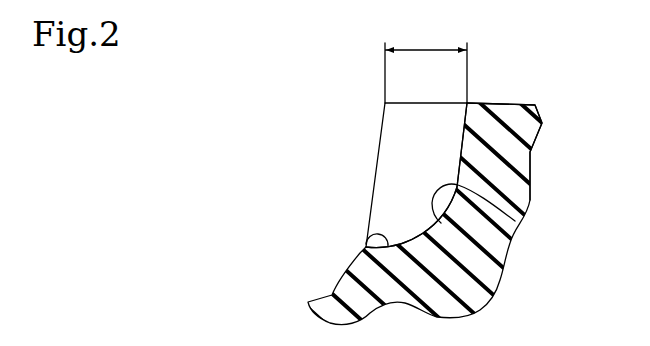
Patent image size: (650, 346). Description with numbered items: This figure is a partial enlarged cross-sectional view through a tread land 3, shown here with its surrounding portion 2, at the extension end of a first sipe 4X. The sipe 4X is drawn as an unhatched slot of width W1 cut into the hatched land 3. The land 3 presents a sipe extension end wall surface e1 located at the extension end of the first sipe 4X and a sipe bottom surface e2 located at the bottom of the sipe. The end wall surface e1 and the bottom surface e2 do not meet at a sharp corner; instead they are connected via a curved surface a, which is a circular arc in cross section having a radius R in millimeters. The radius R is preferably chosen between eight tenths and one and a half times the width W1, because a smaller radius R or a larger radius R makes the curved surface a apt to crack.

The tire tread / rubber body 2 is at (332, 240).
The land 3 is at (506, 105).
The first sipe 4X is at (381, 131).
The sipe width W1 is at (426, 63).
The sipe extension end wall surface e1 is at (462, 151).
The sipe bottom surface e2 is at (367, 240).
The radius R is at (427, 222).
The curved surface a is at (515, 221).